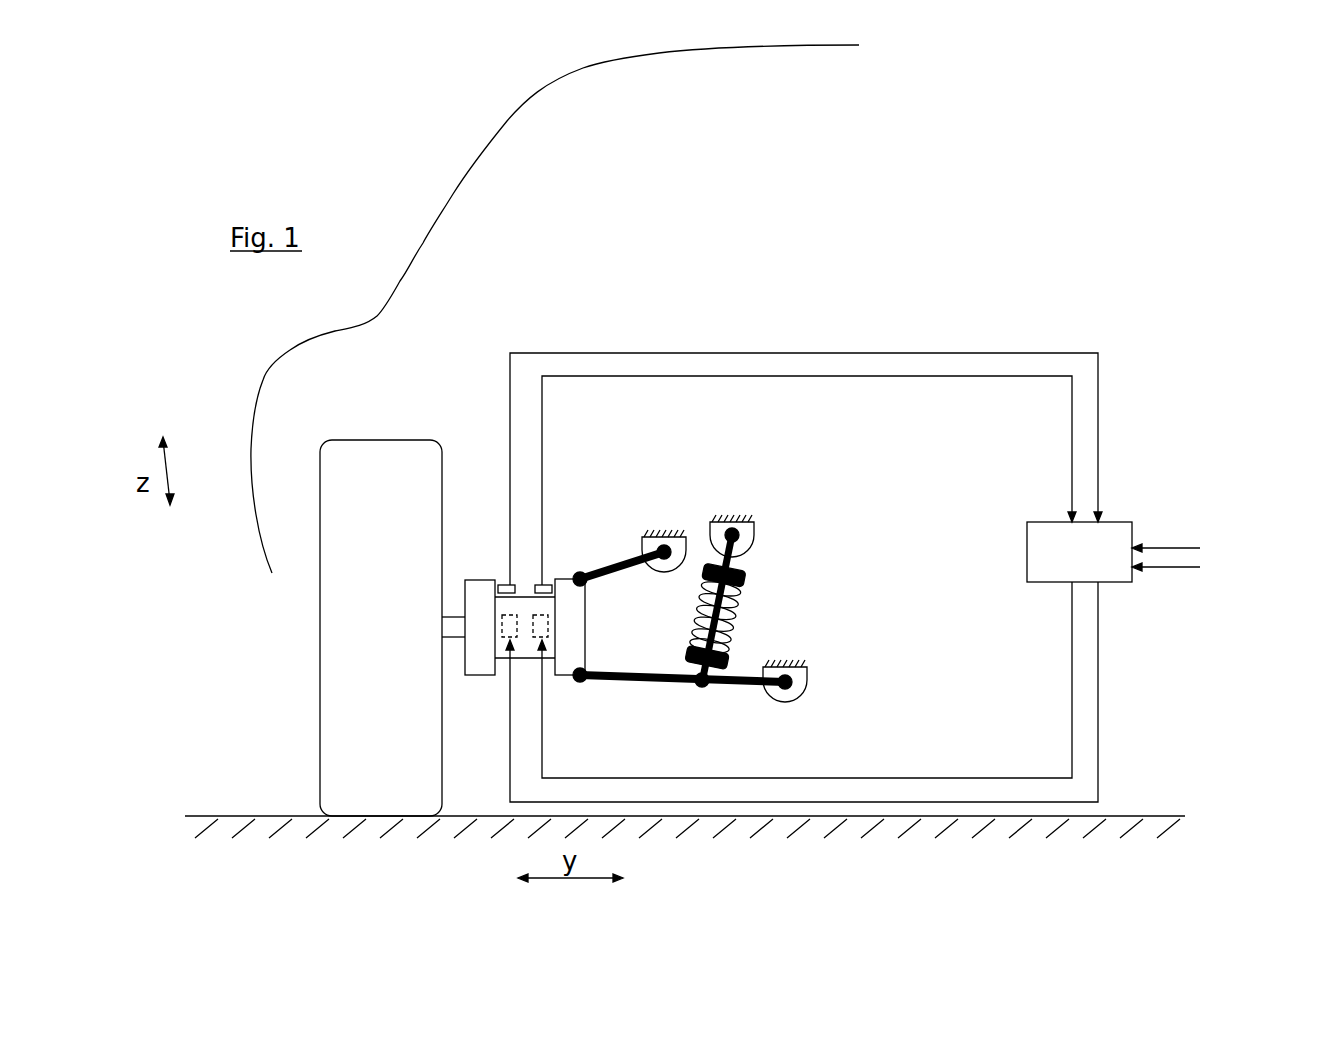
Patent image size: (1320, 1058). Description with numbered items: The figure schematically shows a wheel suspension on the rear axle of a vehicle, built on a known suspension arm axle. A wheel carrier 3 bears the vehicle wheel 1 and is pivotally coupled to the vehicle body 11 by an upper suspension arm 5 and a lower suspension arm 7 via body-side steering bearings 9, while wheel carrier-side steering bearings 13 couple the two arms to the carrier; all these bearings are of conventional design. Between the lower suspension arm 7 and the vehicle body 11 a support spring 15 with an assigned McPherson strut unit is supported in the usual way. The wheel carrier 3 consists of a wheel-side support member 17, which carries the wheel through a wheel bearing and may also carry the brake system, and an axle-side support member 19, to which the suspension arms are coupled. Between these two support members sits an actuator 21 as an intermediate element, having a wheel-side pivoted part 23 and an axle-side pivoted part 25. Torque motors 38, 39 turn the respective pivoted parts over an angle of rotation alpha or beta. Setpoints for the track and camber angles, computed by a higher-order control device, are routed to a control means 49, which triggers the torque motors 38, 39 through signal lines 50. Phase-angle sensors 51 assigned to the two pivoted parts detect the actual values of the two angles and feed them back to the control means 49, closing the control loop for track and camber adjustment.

The vehicle wheel 1 is at (398, 441).
The wheel carrier 3 is at (546, 572).
The upper suspension arm 5 is at (608, 565).
The lower suspension arm 7 is at (729, 688).
The body-side steering bearings 9 is at (664, 560).
The vehicle body 11 is at (648, 537).
The wheel carrier-side steering bearings 13 is at (581, 572).
The support spring 15 is at (745, 595).
The wheel-side support member 17 is at (483, 662).
The axle-side support member 19 is at (578, 624).
The actuator 21 is at (534, 582).
The wheel-side pivoted part 23 is at (492, 607).
The axle-side pivoted part 25 is at (541, 597).
The torque motor 38 is at (541, 597).
The torque motor 39 is at (532, 643).
The control means 49 is at (1139, 556).
The signal lines 50 is at (1073, 676).
The phase-angle sensors 51 is at (500, 585).